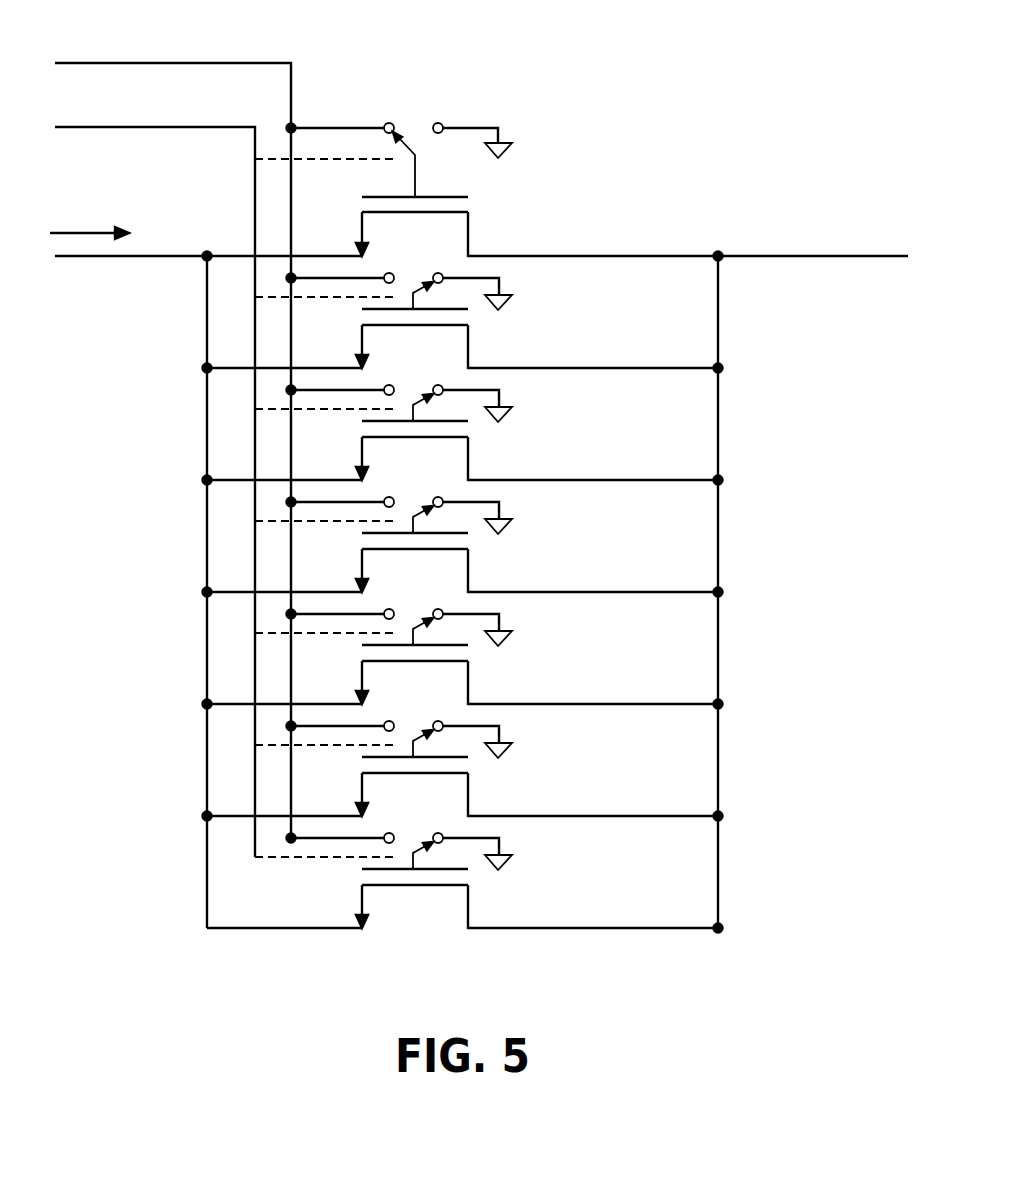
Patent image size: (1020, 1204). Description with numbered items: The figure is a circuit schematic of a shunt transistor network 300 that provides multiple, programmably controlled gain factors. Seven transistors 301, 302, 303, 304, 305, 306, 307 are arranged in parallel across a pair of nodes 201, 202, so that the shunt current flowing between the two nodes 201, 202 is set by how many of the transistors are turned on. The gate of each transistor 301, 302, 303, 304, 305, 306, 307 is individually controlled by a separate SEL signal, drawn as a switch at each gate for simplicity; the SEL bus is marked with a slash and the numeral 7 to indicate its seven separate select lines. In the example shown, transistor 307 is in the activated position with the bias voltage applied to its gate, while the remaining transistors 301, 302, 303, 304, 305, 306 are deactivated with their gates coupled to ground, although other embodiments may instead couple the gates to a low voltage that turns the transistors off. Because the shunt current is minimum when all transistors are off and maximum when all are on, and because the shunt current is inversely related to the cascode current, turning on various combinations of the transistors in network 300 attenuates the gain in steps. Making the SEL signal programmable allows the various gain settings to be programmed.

The select bus width 7 is at (197, 134).
The node 201 is at (207, 254).
The node 202 is at (718, 256).
The transistor network 300 is at (785, 99).
The transistor 301 is at (468, 878).
The transistor 302 is at (468, 766).
The transistor 303 is at (468, 654).
The transistor 304 is at (468, 542).
The transistor 305 is at (468, 430).
The transistor 306 is at (468, 318).
The transistor 307 is at (470, 205).